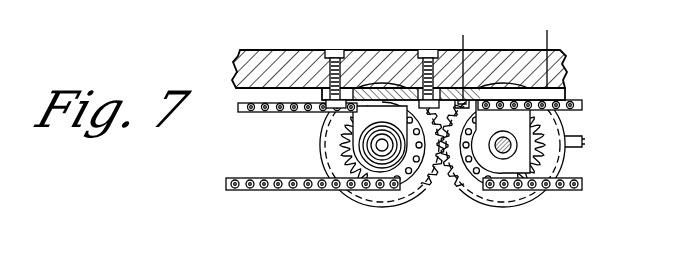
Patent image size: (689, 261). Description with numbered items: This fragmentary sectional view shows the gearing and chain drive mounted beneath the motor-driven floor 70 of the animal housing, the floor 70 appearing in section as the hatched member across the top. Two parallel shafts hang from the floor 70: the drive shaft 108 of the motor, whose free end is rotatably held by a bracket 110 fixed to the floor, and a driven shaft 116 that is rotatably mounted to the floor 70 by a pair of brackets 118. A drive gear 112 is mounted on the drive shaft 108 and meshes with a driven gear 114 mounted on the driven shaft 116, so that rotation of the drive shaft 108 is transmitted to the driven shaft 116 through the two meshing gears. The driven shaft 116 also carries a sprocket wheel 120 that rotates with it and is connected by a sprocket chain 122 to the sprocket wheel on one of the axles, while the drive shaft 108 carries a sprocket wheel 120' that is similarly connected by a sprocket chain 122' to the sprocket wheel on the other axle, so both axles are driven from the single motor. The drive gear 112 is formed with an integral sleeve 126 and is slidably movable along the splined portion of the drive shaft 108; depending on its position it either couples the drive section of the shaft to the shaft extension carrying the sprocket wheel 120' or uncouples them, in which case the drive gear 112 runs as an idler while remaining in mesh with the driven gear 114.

The floor 70 is at (291, 60).
The drive shaft 108 is at (495, 150).
The bracket 110 is at (497, 95).
The drive gear 112 is at (502, 195).
The driven gear 114 is at (365, 192).
The driven shaft 116 is at (382, 148).
The brackets 118 is at (382, 95).
The sprocket wheel 120 is at (305, 145).
The sprocket wheel 120' is at (566, 145).
The sprocket chain 122 is at (313, 162).
The sprocket chain 122' is at (548, 163).
The sleeve 126 is at (585, 138).